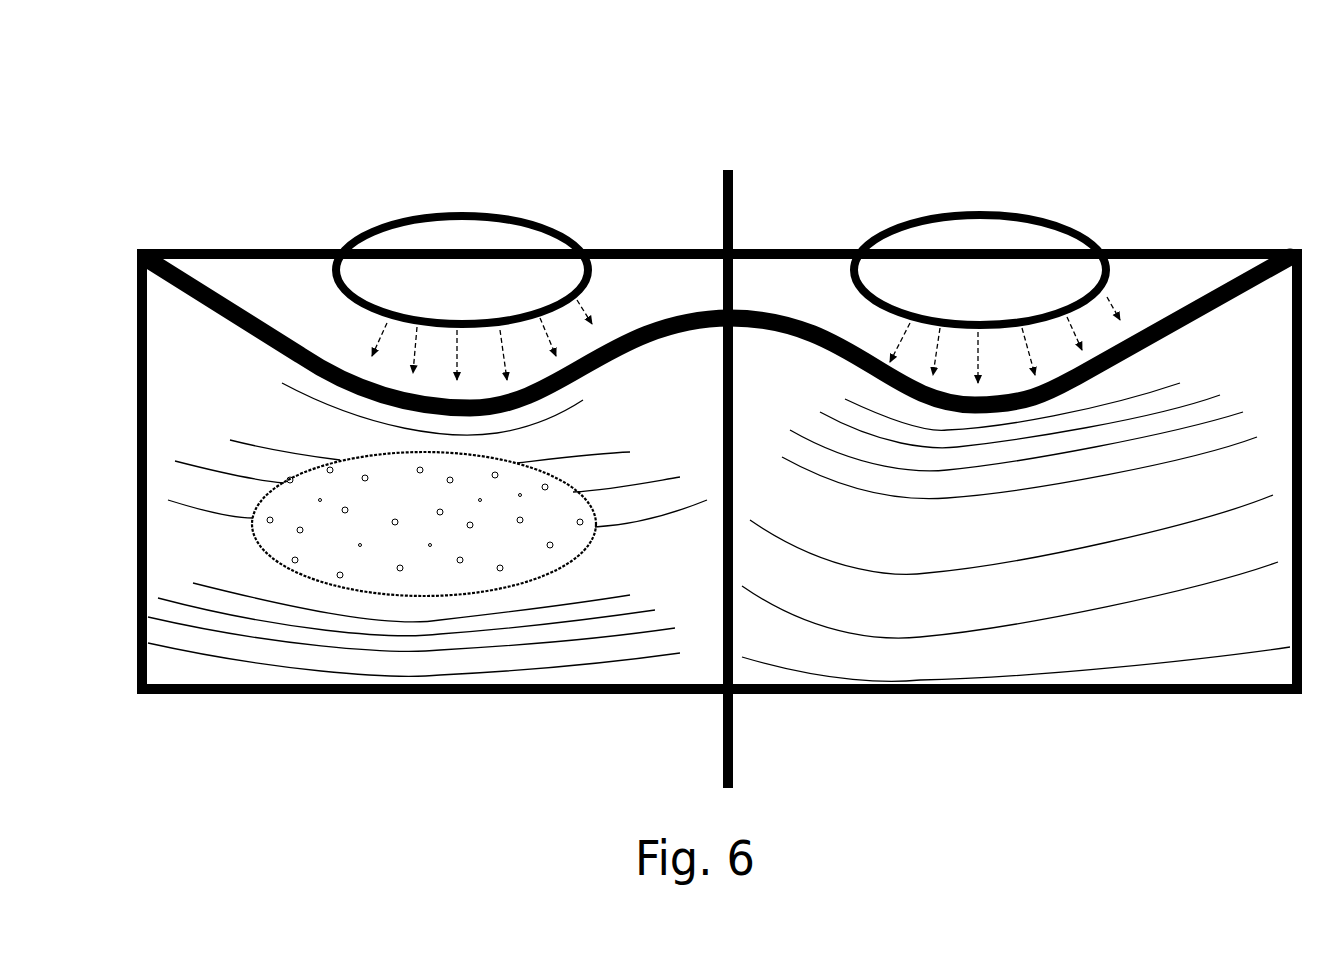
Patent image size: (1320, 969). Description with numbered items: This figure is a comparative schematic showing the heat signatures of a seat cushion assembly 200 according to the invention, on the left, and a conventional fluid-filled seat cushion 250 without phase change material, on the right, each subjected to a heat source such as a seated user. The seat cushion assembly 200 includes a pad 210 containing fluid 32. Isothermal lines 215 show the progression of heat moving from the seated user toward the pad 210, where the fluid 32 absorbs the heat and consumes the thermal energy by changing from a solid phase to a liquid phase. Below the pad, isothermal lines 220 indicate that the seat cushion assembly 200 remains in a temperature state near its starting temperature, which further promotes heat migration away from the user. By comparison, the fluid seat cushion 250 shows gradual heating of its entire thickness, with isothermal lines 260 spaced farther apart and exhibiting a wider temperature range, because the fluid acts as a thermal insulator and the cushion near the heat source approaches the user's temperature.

The seat cushion assembly 200 is at (378, 160).
The fluid-filled seat cushion 250 is at (1040, 160).
The fluid 32 is at (340, 455).
The pad 210 is at (270, 556).
The isothermal lines 215 is at (665, 452).
The isothermal lines 220 is at (653, 592).
The isothermal lines 260 is at (1230, 385).